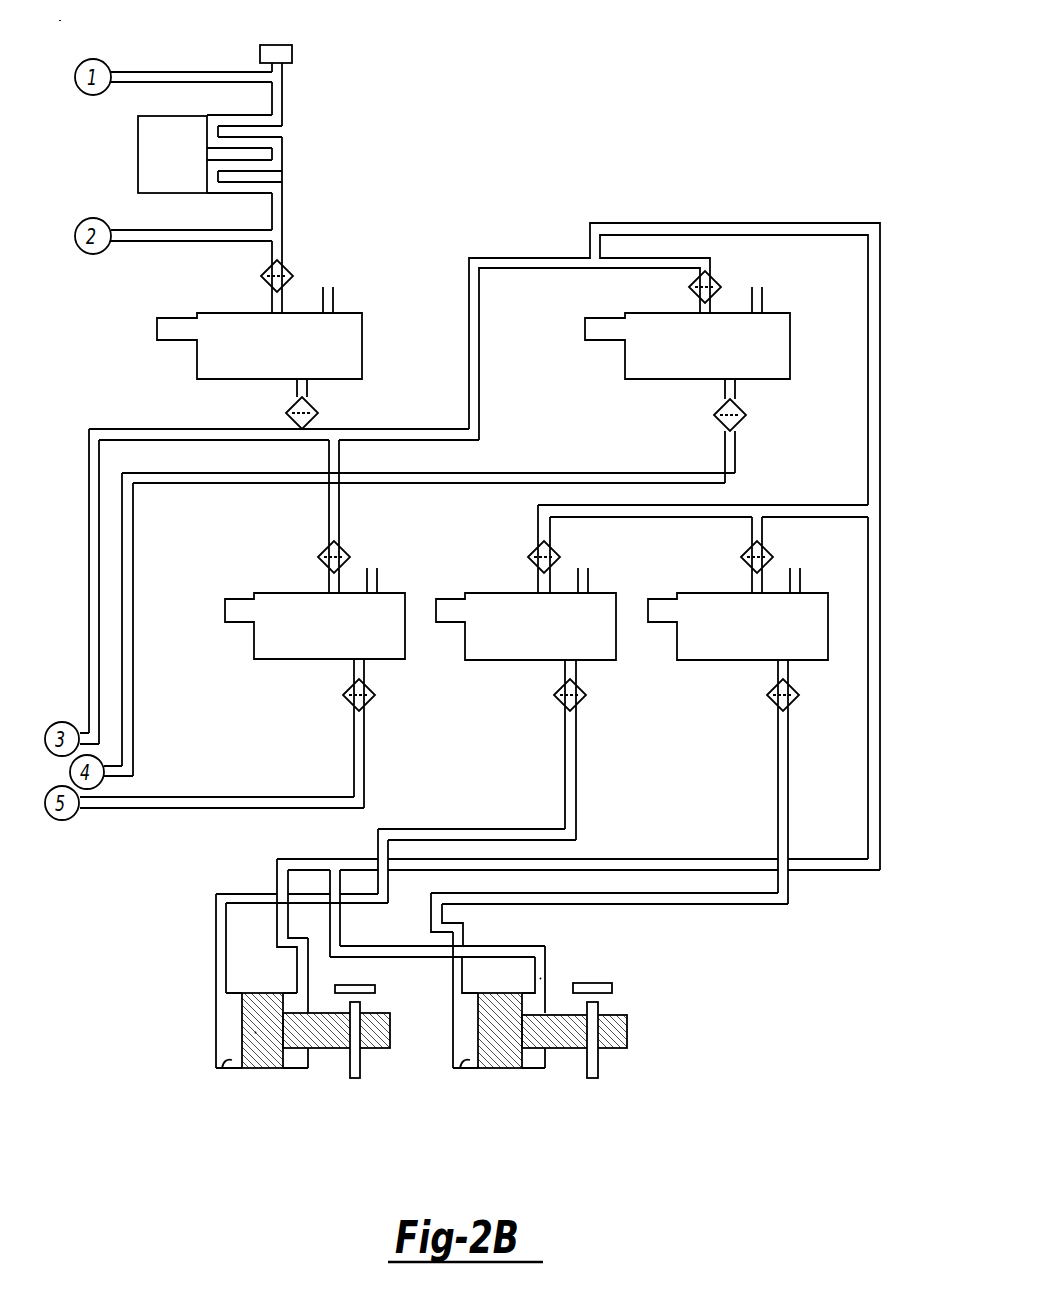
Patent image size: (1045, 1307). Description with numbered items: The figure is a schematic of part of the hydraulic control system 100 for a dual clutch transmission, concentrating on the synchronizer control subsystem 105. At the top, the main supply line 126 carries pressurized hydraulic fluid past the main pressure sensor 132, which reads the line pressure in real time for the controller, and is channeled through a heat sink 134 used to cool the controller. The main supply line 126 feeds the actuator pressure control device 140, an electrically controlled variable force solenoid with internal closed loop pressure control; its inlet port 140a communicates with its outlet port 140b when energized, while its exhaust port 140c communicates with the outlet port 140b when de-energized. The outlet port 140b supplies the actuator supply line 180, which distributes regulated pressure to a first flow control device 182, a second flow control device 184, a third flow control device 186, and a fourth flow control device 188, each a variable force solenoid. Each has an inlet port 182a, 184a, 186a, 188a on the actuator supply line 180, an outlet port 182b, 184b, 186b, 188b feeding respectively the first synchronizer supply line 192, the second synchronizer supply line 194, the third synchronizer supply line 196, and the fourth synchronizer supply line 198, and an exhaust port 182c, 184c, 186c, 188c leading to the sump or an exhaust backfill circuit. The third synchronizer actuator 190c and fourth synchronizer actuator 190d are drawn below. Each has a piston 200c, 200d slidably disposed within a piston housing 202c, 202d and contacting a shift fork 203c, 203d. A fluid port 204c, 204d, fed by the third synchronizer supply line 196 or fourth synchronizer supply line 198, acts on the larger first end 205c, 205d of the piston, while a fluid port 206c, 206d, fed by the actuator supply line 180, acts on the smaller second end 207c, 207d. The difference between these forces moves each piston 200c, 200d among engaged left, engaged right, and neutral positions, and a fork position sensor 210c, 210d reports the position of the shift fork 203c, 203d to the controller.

The hydraulic control system 100 is at (690, 170).
The synchronizer control subsystem 105 is at (355, 1008).
The main supply line 126 is at (127, 70).
The main pressure sensor 132 is at (293, 50).
The heat sink 134 is at (137, 150).
The actuator pressure control device 140 is at (362, 350).
The inlet port 140a is at (272, 308).
The outlet port 140b is at (297, 388).
The exhaust port 140c is at (335, 300).
The actuator supply line 180 is at (530, 258).
The first flow control device 182 is at (790, 350).
The inlet port 182a is at (700, 308).
The outlet port 182b is at (725, 388).
The exhaust port 182c is at (762, 300).
The second flow control device 184 is at (254, 633).
The inlet port 184a is at (330, 588).
The outlet port 184b is at (354, 664).
The exhaust port 184c is at (372, 585).
The third flow control device 186 is at (465, 633).
The inlet port 186a is at (540, 588).
The outlet port 186b is at (565, 664).
The exhaust port 186c is at (583, 585).
The fourth flow control device 188 is at (677, 633).
The inlet port 188a is at (752, 588).
The outlet port 188b is at (777, 664).
The exhaust port 188c is at (795, 585).
The first synchronizer supply line 192 is at (133, 722).
The second synchronizer supply line 194 is at (365, 760).
The third synchronizer supply line 196 is at (576, 765).
The fourth synchronizer supply line 198 is at (788, 790).
The third synchronizer actuator 190c is at (276, 1008).
The fourth synchronizer actuator 190d is at (525, 1035).
The piston 200c is at (255, 1032).
The piston 200d is at (495, 1025).
The piston housing 202c is at (224, 1067).
The piston housing 202d is at (455, 1087).
The shift fork 203c is at (358, 1063).
The shift fork 203d is at (597, 1065).
The fluid port 204c is at (220, 990).
The fluid port 204d is at (453, 992).
The first end 205c is at (242, 1030).
The first end 205d is at (478, 1035).
The fluid port 206c is at (306, 992).
The fluid port 206d is at (542, 978).
The second end 207c is at (285, 1055).
The second end 207d is at (525, 1050).
The fork position sensor 210c is at (375, 989).
The fork position sensor 210d is at (613, 988).